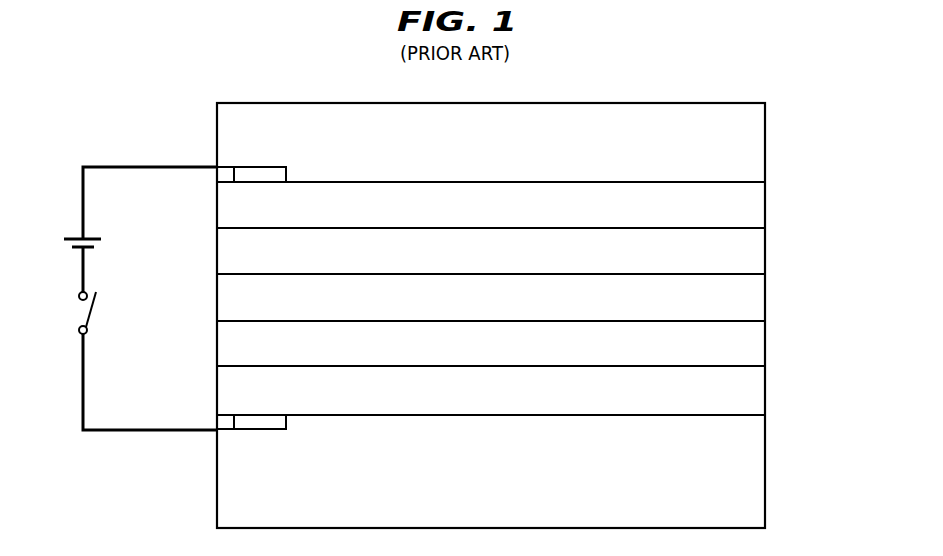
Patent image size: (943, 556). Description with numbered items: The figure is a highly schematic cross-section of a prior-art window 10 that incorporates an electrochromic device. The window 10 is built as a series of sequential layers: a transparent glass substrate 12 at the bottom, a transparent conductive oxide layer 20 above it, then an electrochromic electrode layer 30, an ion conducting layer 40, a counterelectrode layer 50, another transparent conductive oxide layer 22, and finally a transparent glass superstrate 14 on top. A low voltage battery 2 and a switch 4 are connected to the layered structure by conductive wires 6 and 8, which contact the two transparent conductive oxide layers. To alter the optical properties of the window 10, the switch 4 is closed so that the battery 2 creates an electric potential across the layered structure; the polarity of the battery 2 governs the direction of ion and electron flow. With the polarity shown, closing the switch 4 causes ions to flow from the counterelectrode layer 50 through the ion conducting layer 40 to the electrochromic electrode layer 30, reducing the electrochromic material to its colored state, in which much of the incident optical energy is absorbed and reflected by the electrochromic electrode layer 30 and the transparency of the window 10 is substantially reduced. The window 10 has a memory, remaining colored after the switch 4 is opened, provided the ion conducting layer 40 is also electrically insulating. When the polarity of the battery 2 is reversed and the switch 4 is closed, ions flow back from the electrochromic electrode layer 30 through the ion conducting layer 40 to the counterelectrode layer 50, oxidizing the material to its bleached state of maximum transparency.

The window 10 is at (198, 468).
The transparent glass substrate 12 is at (753, 463).
The transparent glass superstrate 14 is at (755, 135).
The transparent conductive oxide layer 20 is at (745, 398).
The transparent conductive oxide layer 22 is at (755, 207).
The electrochromic electrode layer 30 is at (756, 351).
The ion conducting layer 40 is at (757, 288).
The counterelectrode layer 50 is at (757, 257).
The low voltage battery 2 is at (88, 238).
The switch 4 is at (93, 300).
The conductive wire 6 is at (152, 167).
The conductive wire 8 is at (140, 430).